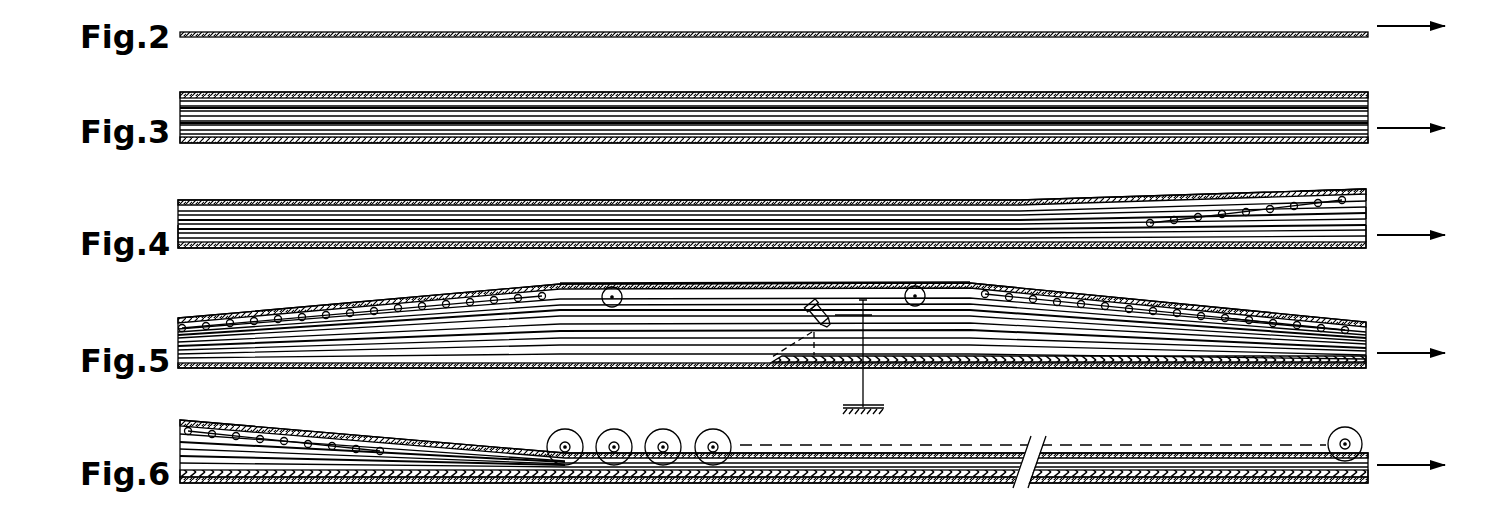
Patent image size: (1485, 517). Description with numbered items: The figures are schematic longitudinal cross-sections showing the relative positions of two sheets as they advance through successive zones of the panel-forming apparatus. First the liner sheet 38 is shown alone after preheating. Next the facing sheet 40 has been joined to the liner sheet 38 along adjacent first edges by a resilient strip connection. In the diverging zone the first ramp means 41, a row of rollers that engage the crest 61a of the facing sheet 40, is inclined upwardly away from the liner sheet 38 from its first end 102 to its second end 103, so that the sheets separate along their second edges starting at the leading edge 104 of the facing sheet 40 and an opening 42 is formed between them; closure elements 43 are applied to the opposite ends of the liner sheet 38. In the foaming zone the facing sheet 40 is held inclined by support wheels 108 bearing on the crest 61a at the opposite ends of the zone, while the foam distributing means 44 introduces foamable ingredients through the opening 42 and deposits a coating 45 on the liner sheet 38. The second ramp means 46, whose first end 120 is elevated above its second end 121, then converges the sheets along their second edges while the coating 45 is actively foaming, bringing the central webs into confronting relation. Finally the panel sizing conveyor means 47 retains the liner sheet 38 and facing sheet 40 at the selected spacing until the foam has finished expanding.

In FIG. 2, the liner sheet 38 is at (760, 31).
In FIG. 3, the liner sheet 38 is at (655, 144).
In FIG. 4, the liner sheet 38 is at (385, 254).
In FIG. 5, the liner sheet 38 is at (672, 368).
In FIG. 6, the liner sheet 38 is at (530, 482).
In FIG. 3, the facing sheet 40 is at (707, 90).
In FIG. 4, the facing sheet 40 is at (742, 197).
In FIG. 5, the facing sheet 40 is at (866, 280).
In FIG. 6, the facing sheet 40 is at (363, 433).
In FIG. 4, the first ramp means 41 is at (1372, 198).
In FIG. 4, the opening 42 is at (1372, 212).
In FIG. 5, the opening 42 is at (776, 318).
In FIG. 4, the closure elements 43 is at (1372, 232).
In FIG. 5, the foam distributing means 44 is at (847, 302).
In FIG. 5, the coating 45 is at (946, 350).
In FIG. 6, the coating 45 is at (415, 470).
In FIG. 5, the second ramp means 46 is at (1270, 278).
In FIG. 6, the panel sizing conveyor means 47 is at (707, 425).
In FIG. 5, the crest 61a is at (710, 282).
In FIG. 4, the first end 102 is at (1153, 218).
In FIG. 5, the second end 103 is at (560, 282).
In FIG. 4, the leading edge 104 is at (1385, 160).
In FIG. 5, the support wheels 108 is at (625, 286).
In FIG. 5, the first end 120 is at (985, 276).
In FIG. 6, the second end 121 is at (396, 449).